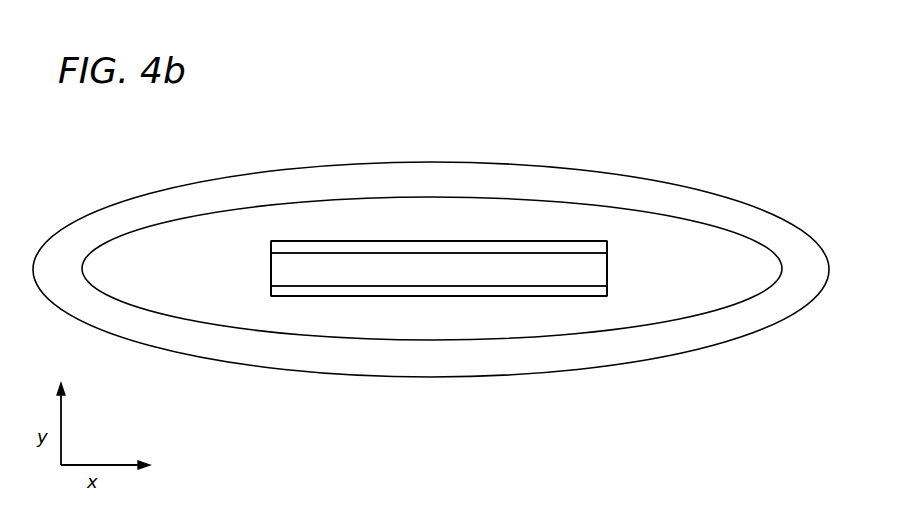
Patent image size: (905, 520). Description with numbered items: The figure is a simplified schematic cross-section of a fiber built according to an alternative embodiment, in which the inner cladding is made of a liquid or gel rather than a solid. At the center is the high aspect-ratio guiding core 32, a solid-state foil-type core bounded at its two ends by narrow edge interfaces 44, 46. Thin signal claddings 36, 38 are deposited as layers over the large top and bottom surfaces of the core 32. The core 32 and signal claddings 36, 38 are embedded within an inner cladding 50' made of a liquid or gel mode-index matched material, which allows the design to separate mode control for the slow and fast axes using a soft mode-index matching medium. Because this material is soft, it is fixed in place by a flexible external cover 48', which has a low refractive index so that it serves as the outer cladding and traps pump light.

The core 32 is at (494, 265).
The signal cladding 36 is at (550, 242).
The signal cladding 38 is at (483, 297).
The narrow edge interface 44 is at (272, 268).
The narrow edge interface 46 is at (607, 270).
The flexible external cover 48' is at (431, 249).
The inner cladding 50' is at (432, 298).